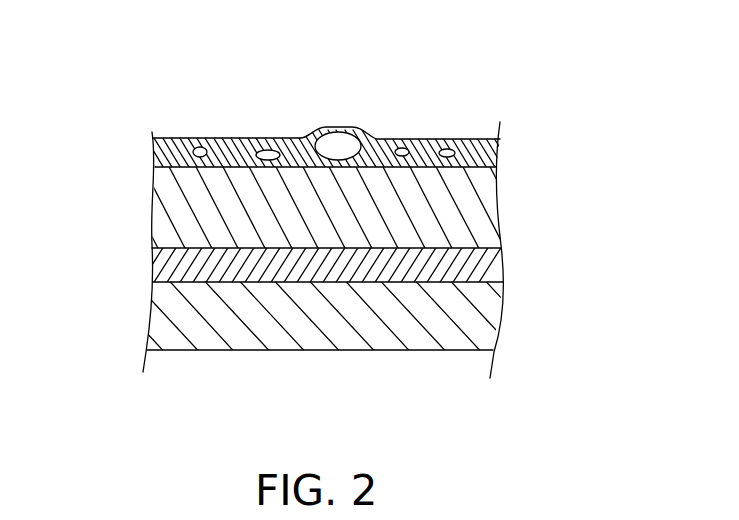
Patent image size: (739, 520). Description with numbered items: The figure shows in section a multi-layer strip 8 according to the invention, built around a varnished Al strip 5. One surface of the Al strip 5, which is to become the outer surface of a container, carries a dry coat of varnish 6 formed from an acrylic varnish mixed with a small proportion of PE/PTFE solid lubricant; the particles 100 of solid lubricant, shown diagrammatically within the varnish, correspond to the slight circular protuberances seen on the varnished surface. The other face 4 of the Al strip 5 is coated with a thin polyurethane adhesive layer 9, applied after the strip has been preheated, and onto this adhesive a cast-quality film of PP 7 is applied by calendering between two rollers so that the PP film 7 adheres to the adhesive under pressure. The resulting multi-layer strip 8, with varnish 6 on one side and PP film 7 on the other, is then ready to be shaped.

The particles of solid lubricant 100 is at (347, 147).
The coat of varnish 6 is at (475, 152).
The Al strip 5 is at (447, 215).
The other face of the Al strip 4 is at (467, 252).
The adhesive layer 9 is at (487, 273).
The film of PP 7 is at (450, 318).
The multi-layer strip 8 is at (122, 326).